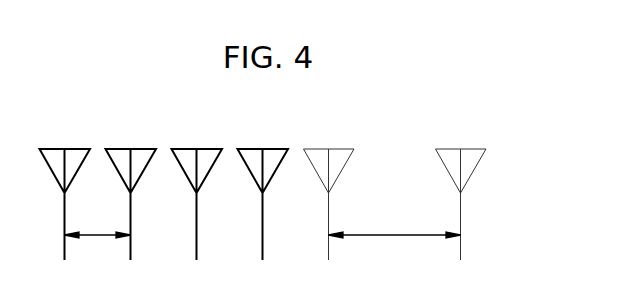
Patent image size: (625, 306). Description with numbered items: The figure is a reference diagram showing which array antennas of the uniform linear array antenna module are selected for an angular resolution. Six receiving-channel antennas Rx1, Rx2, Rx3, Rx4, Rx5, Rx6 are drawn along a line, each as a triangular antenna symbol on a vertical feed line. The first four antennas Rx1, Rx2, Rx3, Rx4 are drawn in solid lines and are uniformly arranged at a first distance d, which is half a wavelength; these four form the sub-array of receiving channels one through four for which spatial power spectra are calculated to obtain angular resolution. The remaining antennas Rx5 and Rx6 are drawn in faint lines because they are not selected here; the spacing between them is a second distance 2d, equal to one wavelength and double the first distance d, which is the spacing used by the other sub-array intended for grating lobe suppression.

The receiving channel 1 antenna Rx1 is at (65, 219).
The receiving channel 2 antenna Rx2 is at (131, 219).
The receiving channel 3 antenna Rx3 is at (197, 219).
The receiving channel 4 antenna Rx4 is at (263, 219).
The receiving channel 5 antenna Rx5 is at (329, 219).
The receiving channel 6 antenna Rx6 is at (461, 219).
The first distance d is at (98, 224).
The second distance 2d is at (395, 224).